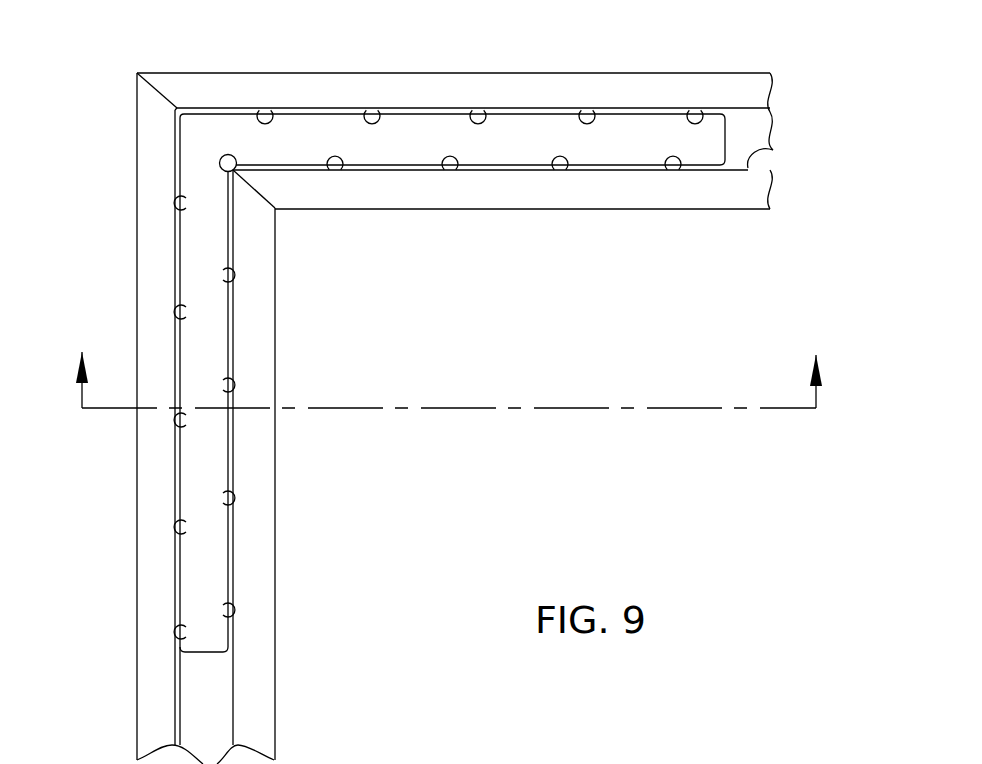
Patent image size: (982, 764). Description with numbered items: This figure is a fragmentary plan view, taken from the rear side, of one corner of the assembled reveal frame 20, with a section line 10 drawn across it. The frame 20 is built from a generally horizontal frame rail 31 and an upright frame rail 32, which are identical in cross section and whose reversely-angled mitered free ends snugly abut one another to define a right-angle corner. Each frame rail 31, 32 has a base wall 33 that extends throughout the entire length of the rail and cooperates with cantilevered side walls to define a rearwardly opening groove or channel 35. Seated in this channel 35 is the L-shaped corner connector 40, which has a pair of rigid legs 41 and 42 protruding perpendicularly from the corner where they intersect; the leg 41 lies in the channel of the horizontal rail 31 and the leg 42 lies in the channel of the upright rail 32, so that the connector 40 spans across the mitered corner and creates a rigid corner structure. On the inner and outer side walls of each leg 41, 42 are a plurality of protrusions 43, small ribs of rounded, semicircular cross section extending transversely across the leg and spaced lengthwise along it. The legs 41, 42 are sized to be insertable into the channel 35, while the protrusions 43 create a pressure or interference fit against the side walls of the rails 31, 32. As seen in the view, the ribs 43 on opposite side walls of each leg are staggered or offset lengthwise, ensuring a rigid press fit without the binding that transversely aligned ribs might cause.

The section line 10- 10 is at (451, 362).
The reveal frame 20 is at (565, 47).
The upper and lower frame rails 31 is at (302, 72).
The upright frame rails 32 is at (137, 187).
The base wall 33 is at (723, 87).
The channel 35 is at (773, 150).
The corner connector 40 is at (412, 125).
The leg 41 is at (643, 137).
The leg 42 is at (202, 282).
The protrusions 43 is at (587, 108).